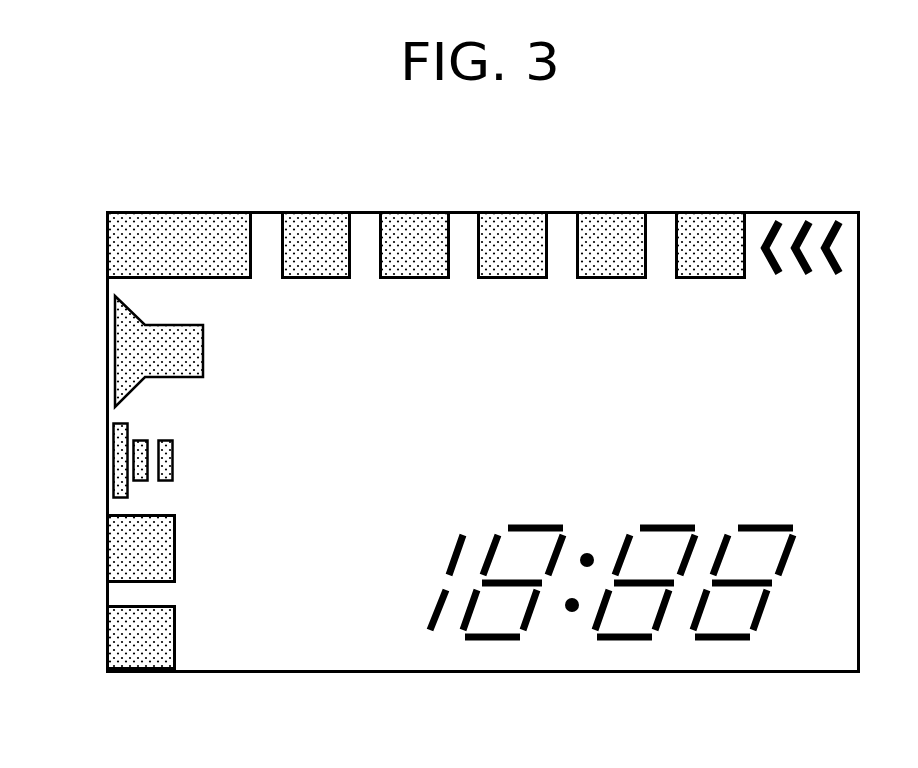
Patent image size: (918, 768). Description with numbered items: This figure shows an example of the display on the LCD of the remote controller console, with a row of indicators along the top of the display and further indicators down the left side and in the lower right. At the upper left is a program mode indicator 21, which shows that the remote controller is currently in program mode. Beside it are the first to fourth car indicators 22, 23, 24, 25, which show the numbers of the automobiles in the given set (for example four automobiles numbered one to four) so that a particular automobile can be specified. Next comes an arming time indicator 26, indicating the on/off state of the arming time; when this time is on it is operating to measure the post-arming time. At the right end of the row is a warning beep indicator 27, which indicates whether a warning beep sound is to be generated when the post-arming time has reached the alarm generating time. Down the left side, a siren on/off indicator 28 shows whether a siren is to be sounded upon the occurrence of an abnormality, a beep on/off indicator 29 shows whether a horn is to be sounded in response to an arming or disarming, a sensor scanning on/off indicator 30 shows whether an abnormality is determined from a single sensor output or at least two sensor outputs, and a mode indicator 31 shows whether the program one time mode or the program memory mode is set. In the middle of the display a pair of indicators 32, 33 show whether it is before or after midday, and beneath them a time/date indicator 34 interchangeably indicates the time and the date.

The program mode indicator 21 is at (177, 212).
The first car indicator 22 is at (317, 212).
The second car indicator 23 is at (407, 212).
The third car indicator 24 is at (514, 212).
The fourth car indicator 25 is at (613, 212).
The arming time indicator 26 is at (710, 212).
The warning beep indicator 27 is at (808, 222).
The siren on/off indicator 28 is at (115, 346).
The beep on/off indicator 29 is at (113, 460).
The sensor scanning on/off indicator 30 is at (107, 538).
The mode indicator 31 is at (107, 623).
The before-midday indicator 32 is at (425, 431).
The after-midday indicator 33 is at (420, 487).
The time/date indicator 34 is at (480, 642).